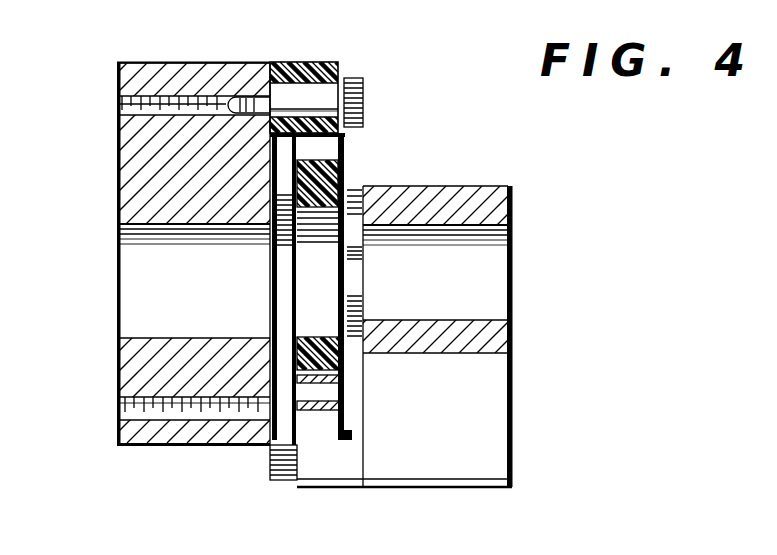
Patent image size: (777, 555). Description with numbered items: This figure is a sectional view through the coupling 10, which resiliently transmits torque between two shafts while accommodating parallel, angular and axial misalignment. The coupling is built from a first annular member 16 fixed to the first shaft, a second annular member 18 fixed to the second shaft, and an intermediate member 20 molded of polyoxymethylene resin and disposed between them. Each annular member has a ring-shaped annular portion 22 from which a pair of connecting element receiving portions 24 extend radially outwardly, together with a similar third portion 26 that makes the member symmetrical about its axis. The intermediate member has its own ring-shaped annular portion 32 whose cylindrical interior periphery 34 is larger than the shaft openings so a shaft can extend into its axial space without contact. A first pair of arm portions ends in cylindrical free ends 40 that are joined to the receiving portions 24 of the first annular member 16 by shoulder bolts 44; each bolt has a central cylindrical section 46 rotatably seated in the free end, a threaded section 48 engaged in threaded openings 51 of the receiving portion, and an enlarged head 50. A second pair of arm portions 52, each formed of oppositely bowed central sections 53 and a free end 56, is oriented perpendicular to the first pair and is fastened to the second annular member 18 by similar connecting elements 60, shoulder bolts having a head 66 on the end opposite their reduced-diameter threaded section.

The coupling 10 is at (394, 134).
The first annular member 16 is at (110, 155).
The second annular member 18 is at (520, 414).
The intermediate member 20 is at (354, 166).
The ring-shaped annular portion 22 is at (135, 195).
The connecting element receiving portions 24 is at (148, 62).
The third portion 26 is at (120, 450).
The ring-shaped annular portion 32 is at (312, 196).
The cylindrical interior periphery 34 is at (318, 333).
The free end 40 is at (340, 66).
The shoulder bolts 44 is at (369, 81).
The central cylindrical sections 46 is at (288, 98).
The threaded sections 48 is at (246, 93).
The enlarged head 50 is at (360, 113).
The threaded openings 51 is at (120, 100).
The second pair of arm portions 52 is at (358, 433).
The bowed central sections 53 is at (337, 390).
The free end 56 is at (356, 208).
The connecting elements 60 is at (258, 489).
The head 66 is at (273, 238).